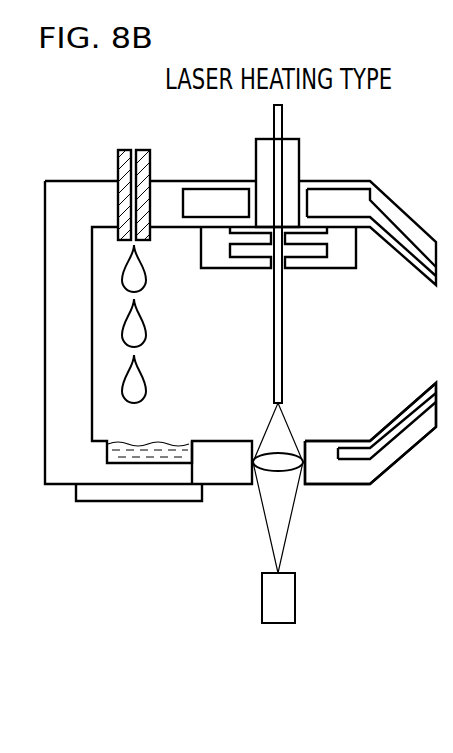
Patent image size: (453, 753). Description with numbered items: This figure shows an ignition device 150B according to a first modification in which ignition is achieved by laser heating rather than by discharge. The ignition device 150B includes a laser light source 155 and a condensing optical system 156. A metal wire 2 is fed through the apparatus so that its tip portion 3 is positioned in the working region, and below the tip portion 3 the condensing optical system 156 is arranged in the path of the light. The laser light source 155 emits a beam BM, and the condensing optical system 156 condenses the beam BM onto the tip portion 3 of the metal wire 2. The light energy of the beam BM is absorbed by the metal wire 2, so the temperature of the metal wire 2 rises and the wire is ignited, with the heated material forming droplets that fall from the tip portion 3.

The metal wire 2 is at (283, 316).
The tip portion 3 is at (275, 404).
The ignition device 150B is at (343, 533).
The laser light source 155 is at (296, 604).
The condensing optical system 156 is at (288, 462).
The beam BM is at (263, 505).